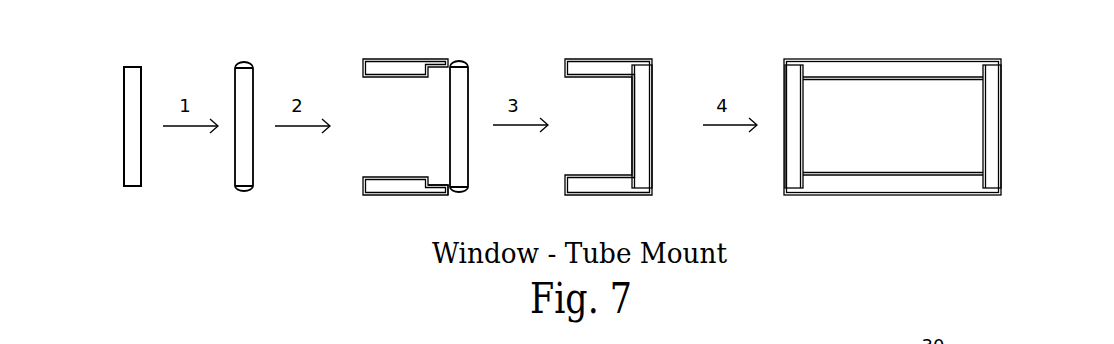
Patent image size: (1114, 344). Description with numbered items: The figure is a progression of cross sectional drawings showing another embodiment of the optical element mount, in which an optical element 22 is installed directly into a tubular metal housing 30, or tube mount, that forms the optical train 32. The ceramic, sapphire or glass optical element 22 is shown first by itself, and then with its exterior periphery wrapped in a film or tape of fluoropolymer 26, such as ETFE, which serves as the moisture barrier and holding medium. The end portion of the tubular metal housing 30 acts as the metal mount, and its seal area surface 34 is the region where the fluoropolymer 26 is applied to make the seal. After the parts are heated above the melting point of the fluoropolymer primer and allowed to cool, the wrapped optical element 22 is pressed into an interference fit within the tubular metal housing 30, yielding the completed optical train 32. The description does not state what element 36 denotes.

The optical element 22 is at (141, 73).
The fluoropolymer 26 is at (246, 62).
The tubular metal housing 30 is at (900, 195).
The optical train 32 is at (928, 145).
The seal area surface 34 is at (438, 182).
The window edge 36 is at (132, 186).